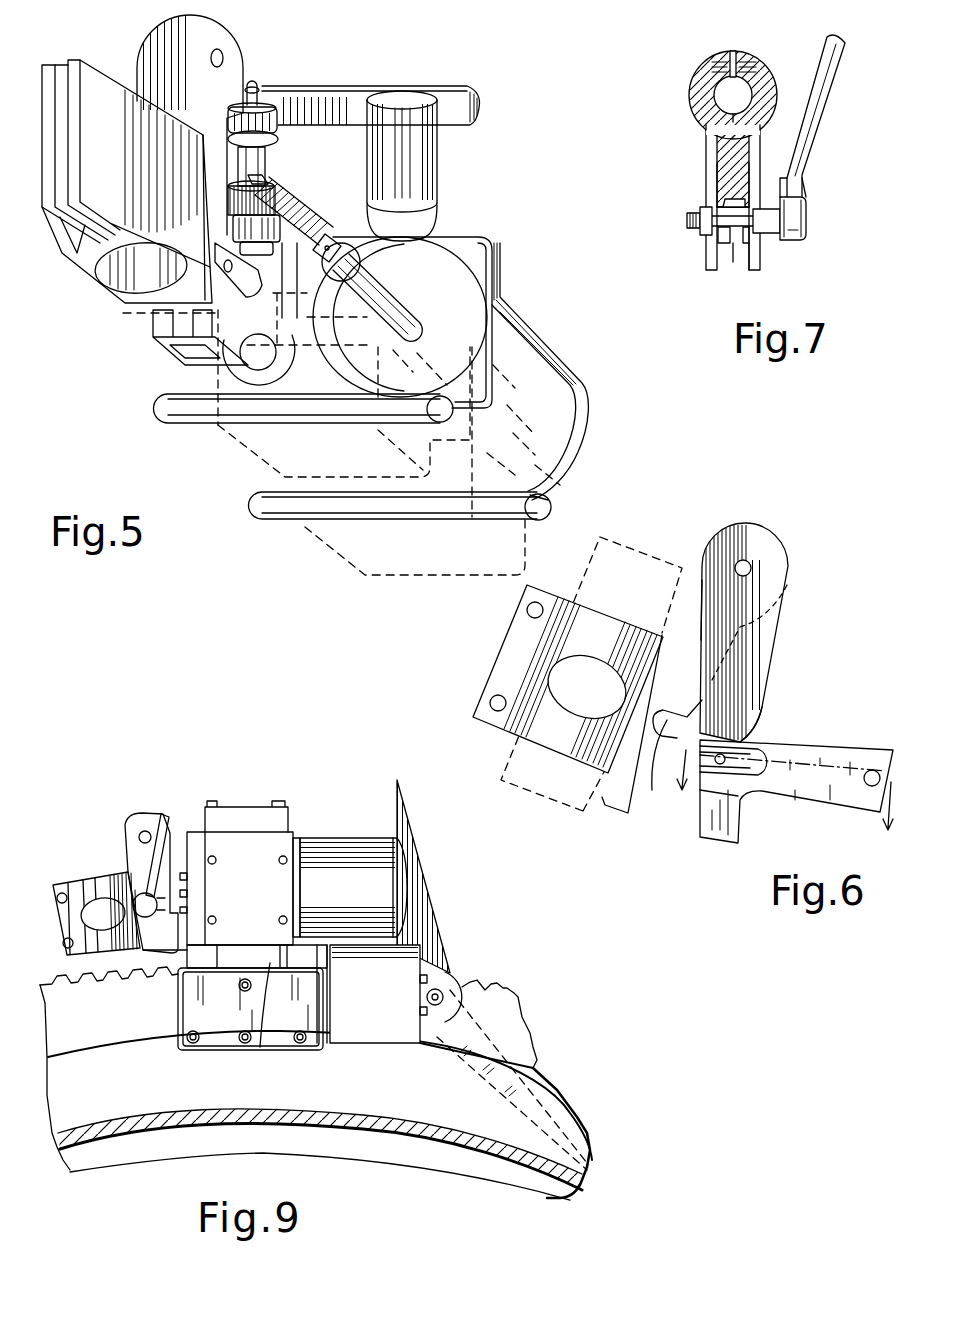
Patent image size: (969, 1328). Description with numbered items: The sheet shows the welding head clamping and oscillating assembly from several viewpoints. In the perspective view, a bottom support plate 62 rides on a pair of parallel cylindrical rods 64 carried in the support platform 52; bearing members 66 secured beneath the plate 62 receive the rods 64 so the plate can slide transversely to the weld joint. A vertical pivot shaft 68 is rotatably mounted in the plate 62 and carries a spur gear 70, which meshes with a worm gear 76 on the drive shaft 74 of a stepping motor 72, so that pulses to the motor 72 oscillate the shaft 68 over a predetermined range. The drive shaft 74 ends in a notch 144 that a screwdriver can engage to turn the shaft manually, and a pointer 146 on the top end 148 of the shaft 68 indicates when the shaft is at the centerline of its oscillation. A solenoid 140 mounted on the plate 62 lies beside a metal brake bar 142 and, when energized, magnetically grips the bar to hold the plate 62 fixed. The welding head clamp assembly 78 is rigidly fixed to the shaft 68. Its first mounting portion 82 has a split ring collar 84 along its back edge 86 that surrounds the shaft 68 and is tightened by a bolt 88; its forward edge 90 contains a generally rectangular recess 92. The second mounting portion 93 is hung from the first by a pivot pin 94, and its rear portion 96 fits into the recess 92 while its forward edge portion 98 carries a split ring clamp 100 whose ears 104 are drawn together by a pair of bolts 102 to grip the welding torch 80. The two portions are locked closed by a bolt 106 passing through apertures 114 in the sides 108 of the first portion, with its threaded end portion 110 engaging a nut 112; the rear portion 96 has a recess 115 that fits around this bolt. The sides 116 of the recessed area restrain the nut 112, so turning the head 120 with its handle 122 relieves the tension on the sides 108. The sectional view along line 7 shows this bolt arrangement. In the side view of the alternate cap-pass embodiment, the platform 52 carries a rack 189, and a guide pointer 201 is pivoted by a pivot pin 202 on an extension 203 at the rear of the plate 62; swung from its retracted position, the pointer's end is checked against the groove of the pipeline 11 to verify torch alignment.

In FIG. 6, the section line 7— 7 is at (785, 808).
In FIG. 9, the pipeline 11 is at (580, 1180).
In FIG. 9, the support platform 52 is at (215, 975).
In FIG. 5, the bottom support plate 62 is at (573, 503).
In FIG. 9, the bottom support plate 62 is at (298, 950).
In FIG. 5, the cylindrical rods 64 is at (178, 420).
In FIG. 5, the bearing members 66 is at (243, 443).
In FIG. 5, the pivot shaft 68 is at (268, 155).
In FIG. 5, the spur gear 70 is at (232, 210).
In FIG. 5, the stepping motor 72 is at (537, 325).
In FIG. 5, the drive shaft 74 is at (401, 292).
In FIG. 5, the worm gear 76 is at (321, 217).
In FIG. 5, the welding head clamp assembly 78 is at (103, 35).
In FIG. 6, the welding head clamp assembly 78 is at (772, 503).
In FIG. 6, the welding head or torch 80 is at (530, 788).
In FIG. 7, the first mounting portion 82 is at (706, 142).
In FIG. 6, the first mounting portion 82 is at (768, 640).
In FIG. 7, the split ring collar 84 is at (693, 87).
In FIG. 6, the split ring collar 84 is at (827, 748).
In FIG. 6, the back edge 86 is at (766, 686).
In FIG. 7, the bolt 88 is at (704, 58).
In FIG. 7, the forward edge 90 is at (763, 258).
In FIG. 6, the forward edge 90 is at (702, 823).
In FIG. 7, the rectangular recess 92 is at (730, 258).
In FIG. 6, the second mounting portion 93 is at (691, 610).
In FIG. 6, the pivot pin 94 is at (752, 566).
In FIG. 6, the rear portion 96 is at (687, 697).
In FIG. 6, the forward edge portion 98 is at (607, 800).
In FIG. 5, the split ring clamp 100 is at (78, 263).
In FIG. 6, the split ring clamp 100 is at (577, 752).
In FIG. 6, the bolts 102 is at (528, 611).
In FIG. 6, the ears 104 is at (495, 722).
In FIG. 7, the bolt 106 is at (763, 232).
In FIG. 7, the sides 108 is at (727, 203).
In FIG. 7, the threaded end portion 110 is at (687, 221).
In FIG. 7, the nut 112 is at (707, 229).
In FIG. 7, the apertures 114 is at (737, 228).
In FIG. 6, the apertures 114 is at (720, 763).
In FIG. 6, the recess 115 is at (668, 775).
In FIG. 6, the sides 116 is at (736, 742).
In FIG. 7, the head 120 is at (812, 217).
In FIG. 7, the handle 122 is at (828, 100).
In FIG. 9, the handle 122 is at (120, 884).
In FIG. 5, the solenoid 140 is at (438, 168).
In FIG. 5, the brake bar 142 is at (352, 88).
In FIG. 5, the notch 144 is at (273, 174).
In FIG. 5, the pointer or index means 146 is at (253, 80).
In FIG. 5, the top end 148 is at (262, 88).
In FIG. 9, the rack 189 is at (270, 965).
In FIG. 9, the guide pointer 201 is at (441, 886).
In FIG. 9, the pivot pin 202 is at (441, 995).
In FIG. 9, the extension 203 is at (388, 1037).